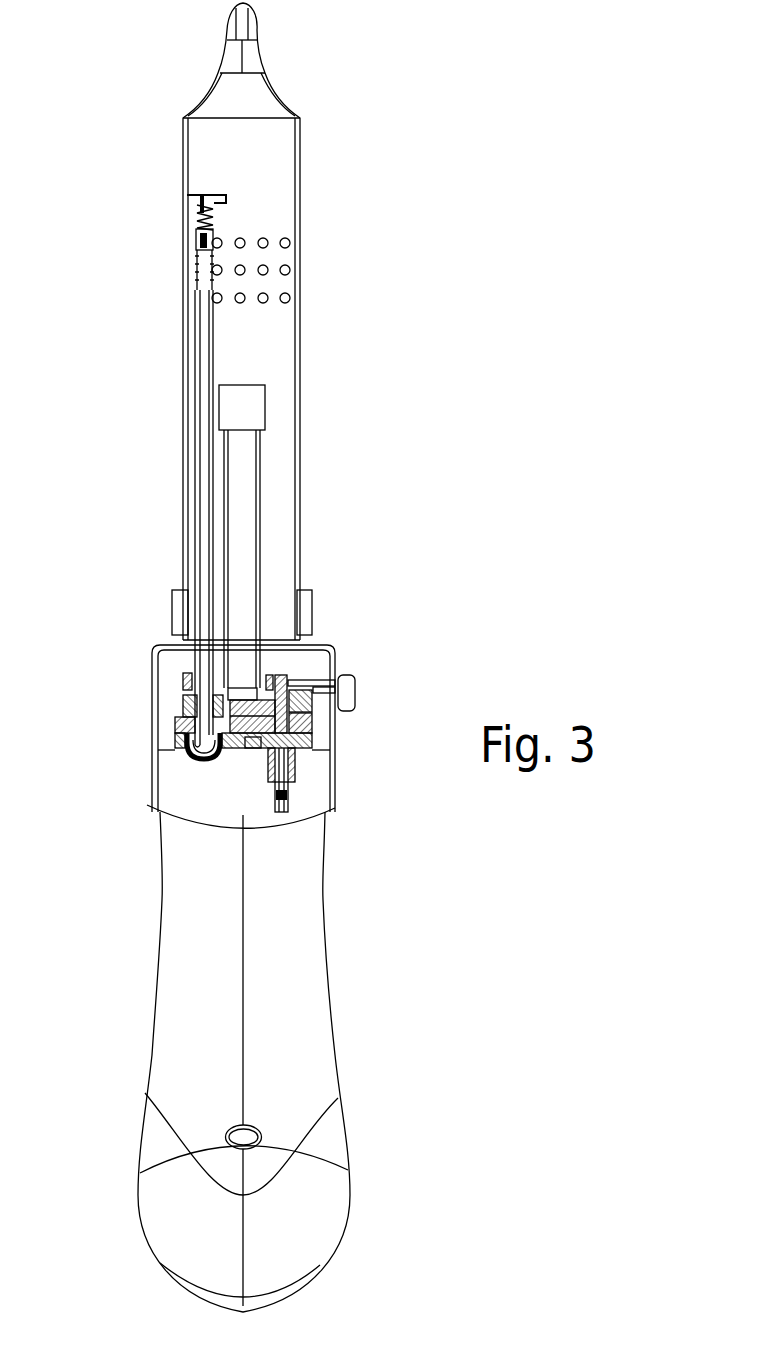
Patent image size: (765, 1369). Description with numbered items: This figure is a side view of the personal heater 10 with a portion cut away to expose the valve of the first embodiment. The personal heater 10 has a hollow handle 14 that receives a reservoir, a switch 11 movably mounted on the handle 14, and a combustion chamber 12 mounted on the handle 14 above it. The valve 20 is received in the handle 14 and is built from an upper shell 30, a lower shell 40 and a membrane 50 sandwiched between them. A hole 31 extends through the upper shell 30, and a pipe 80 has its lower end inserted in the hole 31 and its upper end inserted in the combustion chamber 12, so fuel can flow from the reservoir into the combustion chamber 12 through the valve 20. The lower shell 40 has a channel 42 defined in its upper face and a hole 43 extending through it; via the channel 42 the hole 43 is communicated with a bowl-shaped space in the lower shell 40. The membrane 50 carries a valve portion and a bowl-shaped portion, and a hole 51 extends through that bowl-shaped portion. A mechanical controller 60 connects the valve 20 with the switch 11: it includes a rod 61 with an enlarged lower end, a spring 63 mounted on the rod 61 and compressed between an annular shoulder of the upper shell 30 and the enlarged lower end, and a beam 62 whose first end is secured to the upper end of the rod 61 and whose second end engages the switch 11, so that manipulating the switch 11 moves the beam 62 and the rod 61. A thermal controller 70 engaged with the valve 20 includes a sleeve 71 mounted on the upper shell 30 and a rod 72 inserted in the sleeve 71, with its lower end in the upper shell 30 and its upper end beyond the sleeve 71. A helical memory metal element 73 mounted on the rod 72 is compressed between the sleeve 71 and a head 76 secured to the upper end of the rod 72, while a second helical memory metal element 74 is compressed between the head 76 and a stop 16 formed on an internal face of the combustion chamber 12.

The personal heater 10 is at (366, 872).
The switch 11 is at (356, 689).
The combustion chamber 12 is at (278, 338).
The handle 14 is at (183, 905).
The stop 16 is at (203, 205).
The valve 20 is at (183, 683).
The upper shell 30 is at (175, 717).
The hole 31 is at (219, 742).
The lower shell 40 is at (180, 743).
The channel 42 is at (250, 748).
The hole 43 is at (296, 760).
The membrane 50 is at (305, 738).
The hole 51 is at (204, 755).
The mechanical controller 60 is at (292, 675).
The rod 61 is at (308, 728).
The beam 62 is at (300, 681).
The spring 63 is at (304, 705).
The thermal controller 70 is at (200, 512).
The sleeve 71 is at (197, 335).
The rod 72 is at (205, 314).
The helical memory metal element 73 is at (198, 265).
The helical memory metal element 74 is at (203, 210).
The head 76 is at (200, 235).
The pipe 80 is at (258, 510).